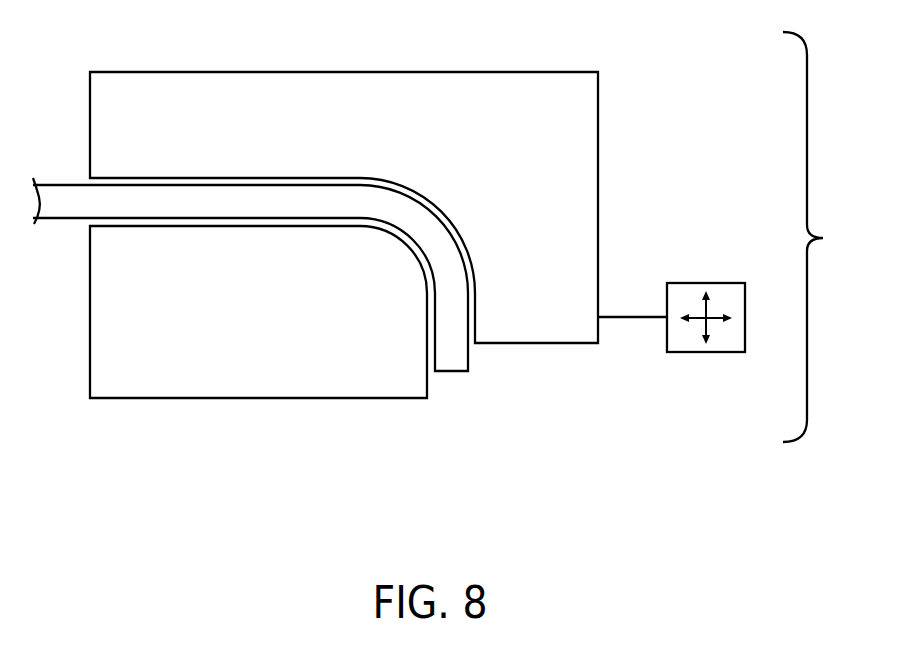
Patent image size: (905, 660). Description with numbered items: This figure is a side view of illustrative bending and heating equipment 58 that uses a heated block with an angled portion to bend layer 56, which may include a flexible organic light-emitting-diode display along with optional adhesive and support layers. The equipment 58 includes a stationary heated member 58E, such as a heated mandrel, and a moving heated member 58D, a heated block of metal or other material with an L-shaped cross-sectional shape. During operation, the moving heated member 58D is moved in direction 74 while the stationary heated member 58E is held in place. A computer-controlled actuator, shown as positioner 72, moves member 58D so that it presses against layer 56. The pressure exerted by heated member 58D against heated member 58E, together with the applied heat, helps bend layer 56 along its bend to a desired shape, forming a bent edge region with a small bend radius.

The layer 56 is at (455, 362).
The bending and heating equipment 58 is at (822, 237).
The moving heated member 58D is at (598, 175).
The stationary heated member 58E is at (302, 398).
The positioner 72 is at (718, 352).
The direction 74 is at (457, 198).